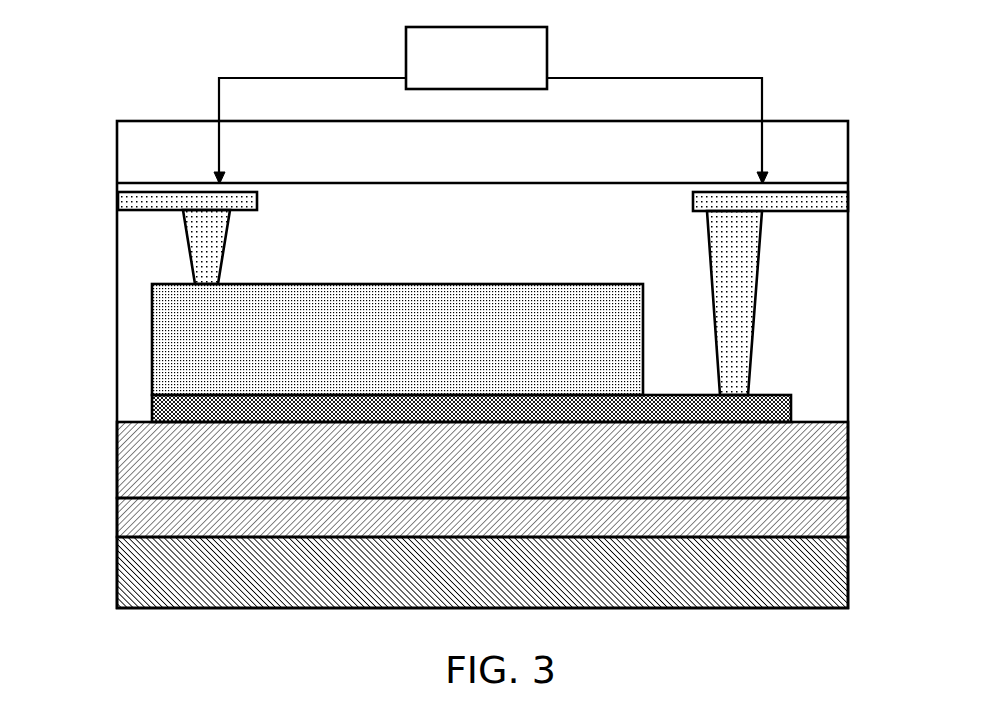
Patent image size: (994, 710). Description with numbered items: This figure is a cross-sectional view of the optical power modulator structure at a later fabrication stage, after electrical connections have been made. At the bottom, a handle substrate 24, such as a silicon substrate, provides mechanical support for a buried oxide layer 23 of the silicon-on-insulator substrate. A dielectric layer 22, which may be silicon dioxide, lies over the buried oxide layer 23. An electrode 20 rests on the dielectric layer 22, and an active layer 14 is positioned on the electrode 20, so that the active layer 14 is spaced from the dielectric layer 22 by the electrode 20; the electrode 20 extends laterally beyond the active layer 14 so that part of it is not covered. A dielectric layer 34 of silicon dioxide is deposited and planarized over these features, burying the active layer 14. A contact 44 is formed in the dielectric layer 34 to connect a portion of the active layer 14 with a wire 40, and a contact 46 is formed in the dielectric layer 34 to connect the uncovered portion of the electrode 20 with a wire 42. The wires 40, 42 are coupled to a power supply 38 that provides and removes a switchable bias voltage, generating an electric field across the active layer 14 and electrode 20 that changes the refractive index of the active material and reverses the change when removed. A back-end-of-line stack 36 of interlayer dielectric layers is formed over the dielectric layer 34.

The active layer 14 is at (195, 342).
The electrode 20 is at (772, 407).
The dielectric layer 22 is at (152, 465).
The buried oxide layer 23 is at (157, 516).
The handle substrate 24 is at (158, 577).
The dielectric layer 34 is at (793, 356).
The back-end-of-line stack 36 is at (185, 154).
The power supply 38 is at (502, 53).
The wire 40 is at (223, 201).
The wire 42 is at (725, 203).
The contact 44 is at (203, 248).
The contact 46 is at (728, 304).